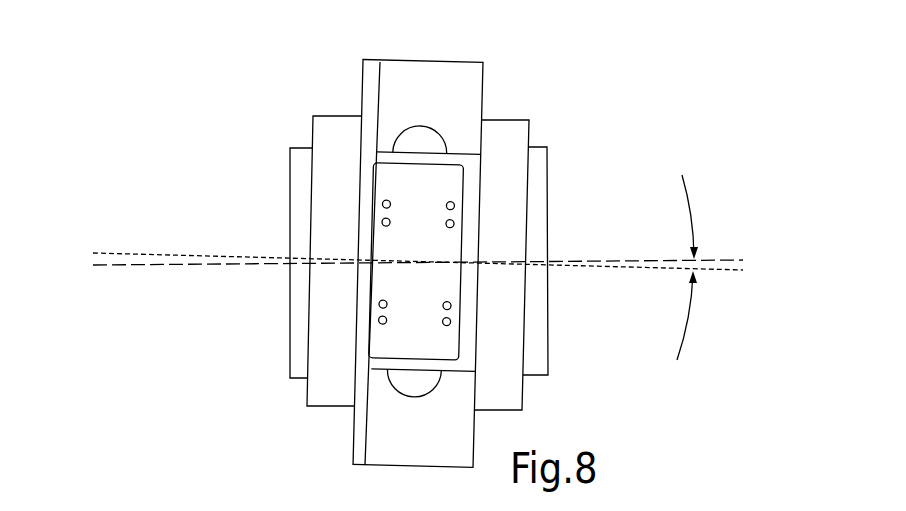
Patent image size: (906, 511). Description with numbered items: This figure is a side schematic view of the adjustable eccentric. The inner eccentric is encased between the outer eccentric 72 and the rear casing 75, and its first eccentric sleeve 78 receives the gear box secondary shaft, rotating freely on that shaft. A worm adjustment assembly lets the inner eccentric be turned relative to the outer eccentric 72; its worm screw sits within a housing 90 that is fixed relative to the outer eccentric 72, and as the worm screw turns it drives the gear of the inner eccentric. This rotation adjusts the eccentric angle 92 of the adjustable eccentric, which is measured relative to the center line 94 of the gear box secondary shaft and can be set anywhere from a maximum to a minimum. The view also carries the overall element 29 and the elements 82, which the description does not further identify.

The coupling assembly 29 is at (242, 202).
The outer eccentric 72 is at (468, 62).
The rear casing 75 is at (368, 61).
The first eccentric sleeve 78 is at (296, 197).
The intermediate blocks 82 is at (348, 118).
The housing 90 is at (445, 289).
The eccentric angle 92 is at (688, 305).
The center line 94 is at (185, 265).